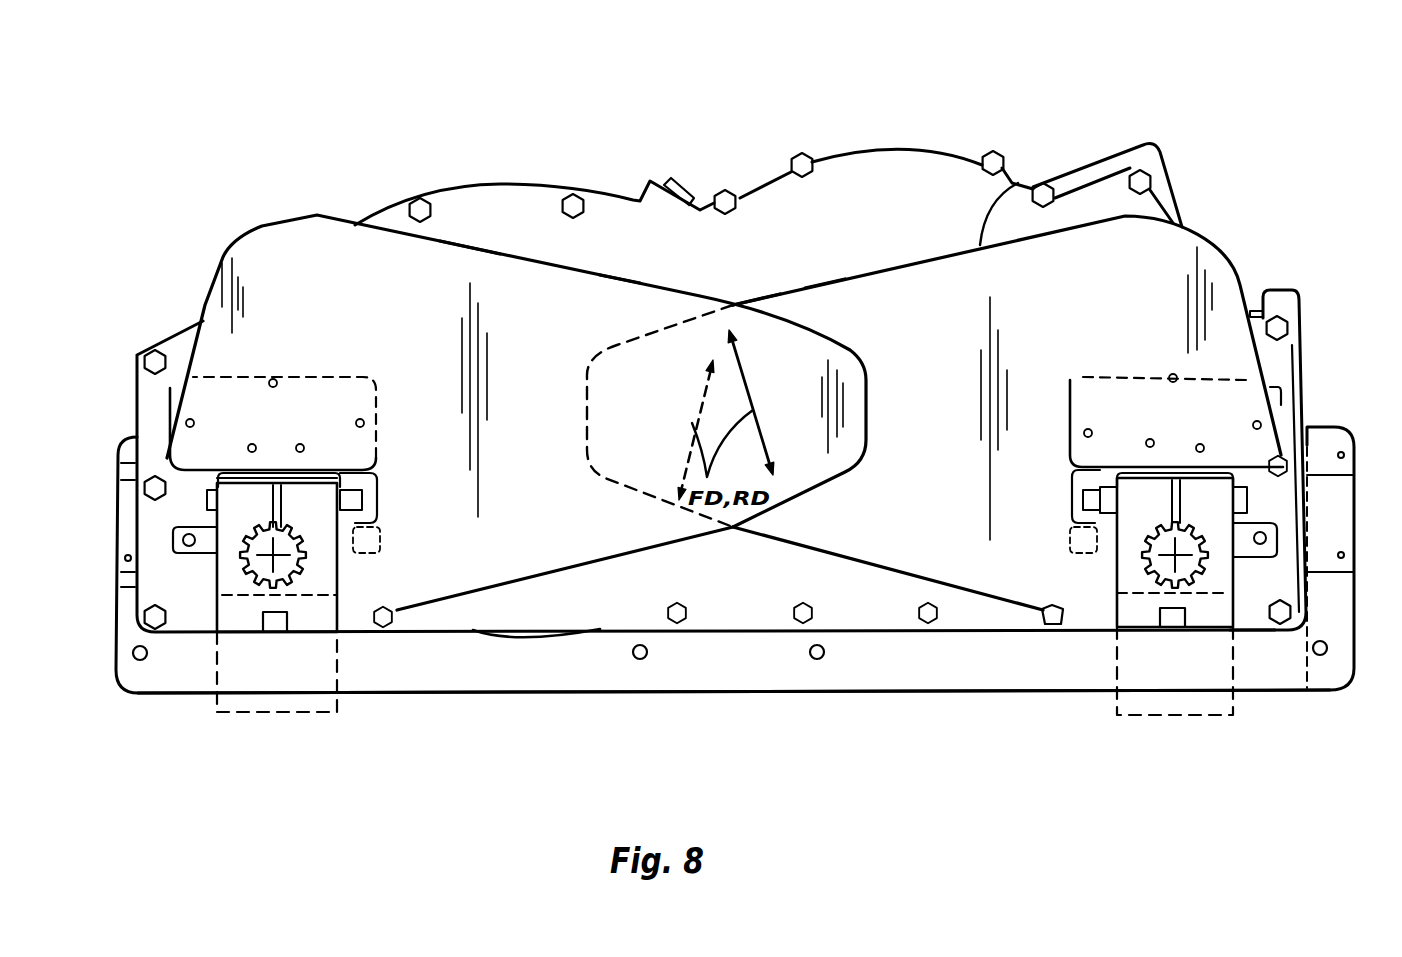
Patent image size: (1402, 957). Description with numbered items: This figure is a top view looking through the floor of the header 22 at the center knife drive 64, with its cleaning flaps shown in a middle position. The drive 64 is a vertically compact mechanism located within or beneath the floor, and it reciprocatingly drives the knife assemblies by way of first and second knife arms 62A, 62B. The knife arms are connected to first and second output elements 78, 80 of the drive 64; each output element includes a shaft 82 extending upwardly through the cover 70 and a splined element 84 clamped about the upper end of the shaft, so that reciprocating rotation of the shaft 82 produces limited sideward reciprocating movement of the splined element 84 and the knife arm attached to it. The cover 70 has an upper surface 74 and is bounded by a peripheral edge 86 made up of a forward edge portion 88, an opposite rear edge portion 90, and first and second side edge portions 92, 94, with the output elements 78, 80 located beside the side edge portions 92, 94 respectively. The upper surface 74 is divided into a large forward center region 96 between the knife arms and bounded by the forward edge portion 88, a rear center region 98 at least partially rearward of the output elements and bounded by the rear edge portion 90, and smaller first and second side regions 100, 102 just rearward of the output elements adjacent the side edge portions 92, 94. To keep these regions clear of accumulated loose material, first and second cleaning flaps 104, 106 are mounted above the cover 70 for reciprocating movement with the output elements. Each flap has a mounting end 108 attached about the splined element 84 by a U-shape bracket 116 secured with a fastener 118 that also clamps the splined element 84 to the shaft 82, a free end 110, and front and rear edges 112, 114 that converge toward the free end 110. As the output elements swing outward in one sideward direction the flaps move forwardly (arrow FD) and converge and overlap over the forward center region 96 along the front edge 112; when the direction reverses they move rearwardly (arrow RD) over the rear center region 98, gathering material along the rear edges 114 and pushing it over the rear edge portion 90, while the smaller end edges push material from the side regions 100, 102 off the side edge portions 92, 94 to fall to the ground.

The header 22 is at (1236, 118).
The first knife arm 62A is at (335, 648).
The second knife arm 62B is at (1115, 650).
The center knife drive 64 is at (886, 161).
The cover 70 is at (550, 200).
The upper surface 74 is at (534, 151).
The first output element 78 is at (217, 598).
The second output element 80 is at (1233, 570).
The shaft 82 is at (305, 573).
The splined element 84 is at (760, 633).
The peripheral edge 86 is at (734, 698).
The forward edge portion 88 is at (893, 630).
The rear edge portion 90 is at (837, 155).
The first side edge portion 92 is at (137, 397).
The second side edge portion 94 is at (1299, 340).
The forward center region 96 is at (733, 580).
The rear center region 98 is at (697, 210).
The first side region 100 is at (182, 347).
The second side region 102 is at (1253, 310).
The first cleaning flap 104 is at (470, 247).
The second cleaning flap 106 is at (1013, 183).
The mounting end 108 is at (227, 430).
The free end 110 is at (747, 301).
The front edge 112 is at (591, 568).
The rear edge 114 is at (640, 283).
The U-shape bracket 116 is at (277, 470).
The fastener 118 is at (363, 483).